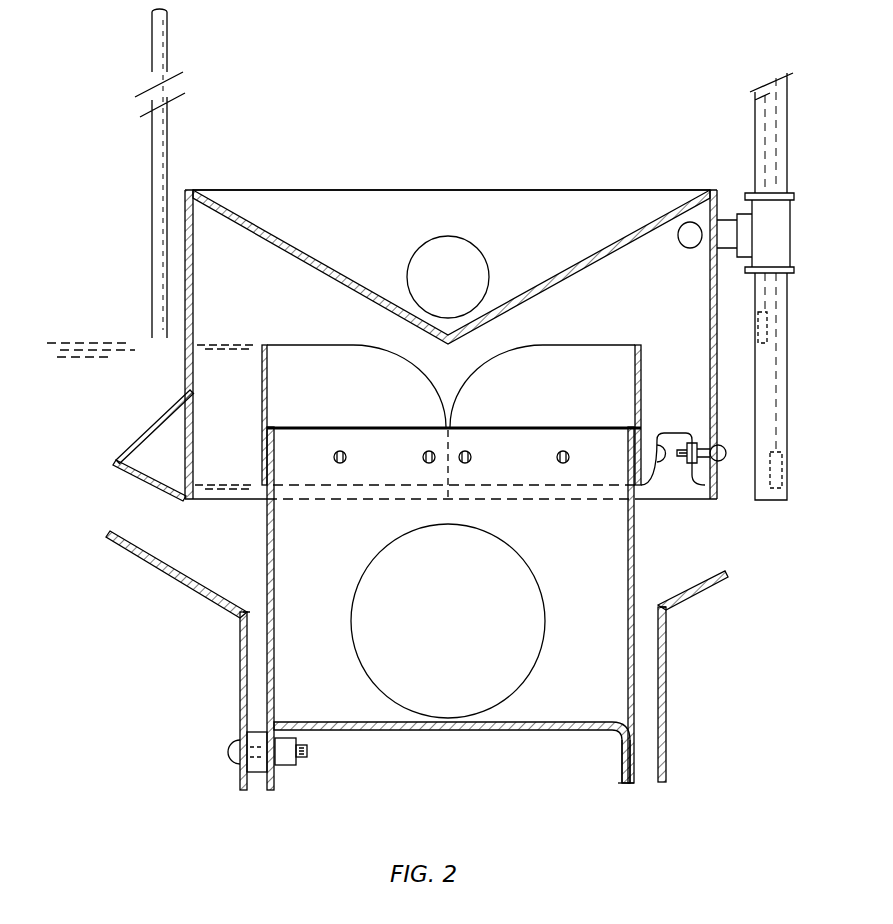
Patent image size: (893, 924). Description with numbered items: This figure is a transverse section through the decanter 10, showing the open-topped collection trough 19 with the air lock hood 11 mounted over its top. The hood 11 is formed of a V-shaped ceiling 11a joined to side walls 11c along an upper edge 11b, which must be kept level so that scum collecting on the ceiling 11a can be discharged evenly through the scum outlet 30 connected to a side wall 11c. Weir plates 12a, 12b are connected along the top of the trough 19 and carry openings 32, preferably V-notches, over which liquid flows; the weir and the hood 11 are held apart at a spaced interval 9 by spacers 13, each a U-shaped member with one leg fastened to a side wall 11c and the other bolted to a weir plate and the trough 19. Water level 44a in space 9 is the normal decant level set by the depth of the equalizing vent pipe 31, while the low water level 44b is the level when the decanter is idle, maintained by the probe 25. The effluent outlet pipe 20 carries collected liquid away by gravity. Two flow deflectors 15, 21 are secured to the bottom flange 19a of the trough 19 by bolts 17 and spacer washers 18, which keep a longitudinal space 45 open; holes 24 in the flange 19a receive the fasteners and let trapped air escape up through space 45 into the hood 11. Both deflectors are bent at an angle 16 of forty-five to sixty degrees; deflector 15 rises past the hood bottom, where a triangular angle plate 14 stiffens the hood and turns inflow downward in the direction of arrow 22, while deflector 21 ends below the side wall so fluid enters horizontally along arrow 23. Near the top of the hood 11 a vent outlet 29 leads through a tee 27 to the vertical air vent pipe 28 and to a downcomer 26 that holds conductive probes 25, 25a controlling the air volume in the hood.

The spaced interval 9 is at (197, 395).
The decanter 10 is at (447, 180).
The air lock hood 11 is at (183, 353).
The ceiling 11a is at (303, 252).
The upper edge 11b is at (193, 190).
The side wall 11c is at (193, 330).
The weir plate 12a is at (262, 380).
The weir plate 12b is at (602, 352).
The spacer 13 is at (668, 433).
The triangular shaped angle plate 14 is at (160, 421).
The flow deflector 15 is at (142, 558).
The angle 16 is at (212, 617).
The bolt 17 is at (230, 752).
The spacer 18 is at (262, 775).
The collection trough 19 is at (376, 733).
The bottom flange 19a is at (615, 771).
The effluent outlet pipe 20 is at (498, 572).
The flow deflector 21 is at (666, 700).
The flow direction arrow 22 is at (72, 471).
The arrow 23 is at (715, 544).
The holes 24 is at (632, 752).
The probe 25 is at (780, 476).
The conductive probe 25a is at (768, 330).
The downcomer 26 is at (787, 378).
The tee 27 is at (790, 243).
The air vent pipe 28 is at (787, 172).
The vent outlet 29 is at (690, 222).
The scum outlet 30 is at (452, 247).
The equalizing vent pipe 31 is at (168, 170).
The openings 32 is at (462, 378).
The water level 44a is at (228, 342).
The low water level 44b is at (245, 473).
The space 45 is at (257, 610).